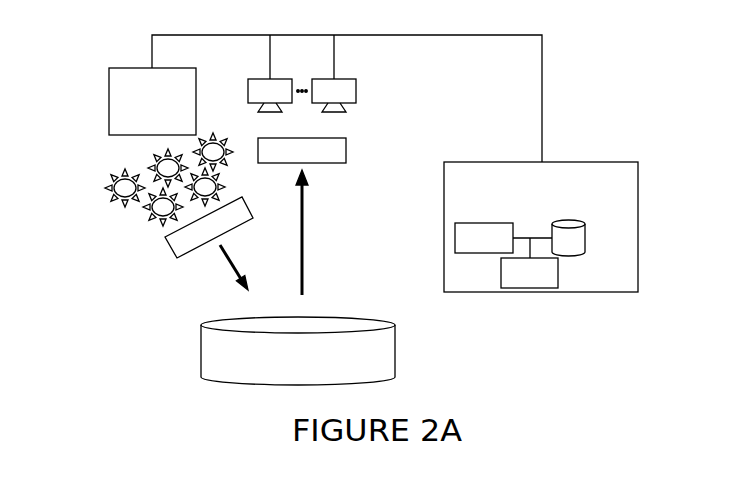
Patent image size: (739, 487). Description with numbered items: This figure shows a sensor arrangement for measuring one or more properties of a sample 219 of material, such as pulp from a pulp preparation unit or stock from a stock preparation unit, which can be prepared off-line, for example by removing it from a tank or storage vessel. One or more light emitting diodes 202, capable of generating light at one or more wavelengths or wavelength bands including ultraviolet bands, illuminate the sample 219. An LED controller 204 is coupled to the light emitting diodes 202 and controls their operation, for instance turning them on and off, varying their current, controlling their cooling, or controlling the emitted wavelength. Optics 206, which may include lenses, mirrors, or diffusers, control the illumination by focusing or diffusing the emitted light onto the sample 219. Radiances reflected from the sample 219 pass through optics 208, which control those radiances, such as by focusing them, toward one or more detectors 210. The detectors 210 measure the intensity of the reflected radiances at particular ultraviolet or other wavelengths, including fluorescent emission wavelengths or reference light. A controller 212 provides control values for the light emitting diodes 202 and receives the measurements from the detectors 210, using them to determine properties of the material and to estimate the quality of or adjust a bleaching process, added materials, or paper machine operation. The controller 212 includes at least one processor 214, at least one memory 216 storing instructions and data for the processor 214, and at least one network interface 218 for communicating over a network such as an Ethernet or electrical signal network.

The light emitting diodes 202 is at (134, 220).
The LED controller 204 is at (127, 64).
The optics 206 is at (176, 260).
The optics 208 is at (330, 172).
The detectors 210 is at (354, 110).
The controller 212 is at (541, 227).
The processor 214 is at (471, 250).
The memory 216 is at (586, 243).
The network interface 218 is at (517, 285).
The sample 219 is at (336, 312).